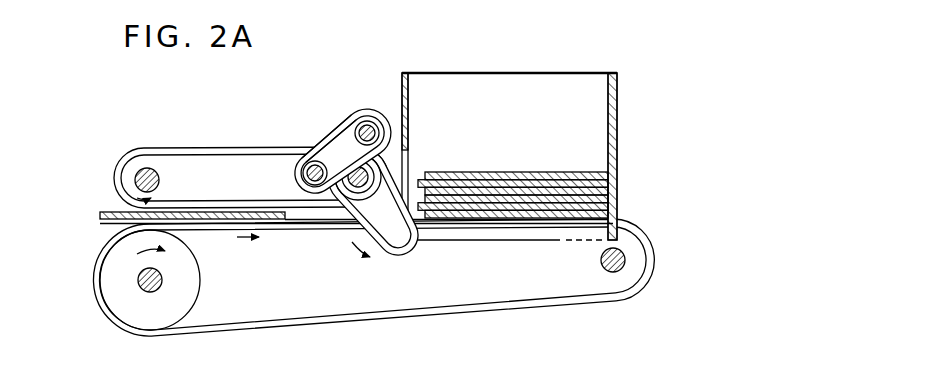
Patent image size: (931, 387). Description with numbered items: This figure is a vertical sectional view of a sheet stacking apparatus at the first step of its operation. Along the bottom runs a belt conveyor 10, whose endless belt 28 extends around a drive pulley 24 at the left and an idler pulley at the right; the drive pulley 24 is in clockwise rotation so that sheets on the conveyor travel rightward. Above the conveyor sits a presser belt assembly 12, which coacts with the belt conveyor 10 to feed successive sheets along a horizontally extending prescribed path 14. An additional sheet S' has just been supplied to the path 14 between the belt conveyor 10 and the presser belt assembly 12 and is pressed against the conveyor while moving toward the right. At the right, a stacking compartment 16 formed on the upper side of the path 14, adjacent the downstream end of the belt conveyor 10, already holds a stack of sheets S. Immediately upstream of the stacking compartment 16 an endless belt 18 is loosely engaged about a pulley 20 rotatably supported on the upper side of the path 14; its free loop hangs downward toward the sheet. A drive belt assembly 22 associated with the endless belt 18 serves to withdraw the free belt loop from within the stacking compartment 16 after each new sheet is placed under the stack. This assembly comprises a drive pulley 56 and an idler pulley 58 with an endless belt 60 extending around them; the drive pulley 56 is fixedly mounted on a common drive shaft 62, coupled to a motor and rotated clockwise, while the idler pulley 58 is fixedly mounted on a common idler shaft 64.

The belt conveyor 10 is at (88, 287).
The presser belt assembly 12 is at (173, 140).
The prescribed path 14 is at (293, 215).
The stacking compartment 16 is at (557, 73).
The endless belt 18 is at (395, 254).
The pulley 20 is at (352, 188).
The drive belt assembly 22 is at (344, 113).
The drive pulley 24 is at (153, 322).
The endless belt 28 is at (507, 307).
The drive pulley 56 is at (360, 120).
The idler pulley 58 is at (324, 153).
The endless belt 60 is at (336, 131).
The drive shaft 62 is at (388, 111).
The idler shaft 64 is at (303, 173).
The stack of sheets S is at (513, 173).
The additional sheet S' is at (173, 201).